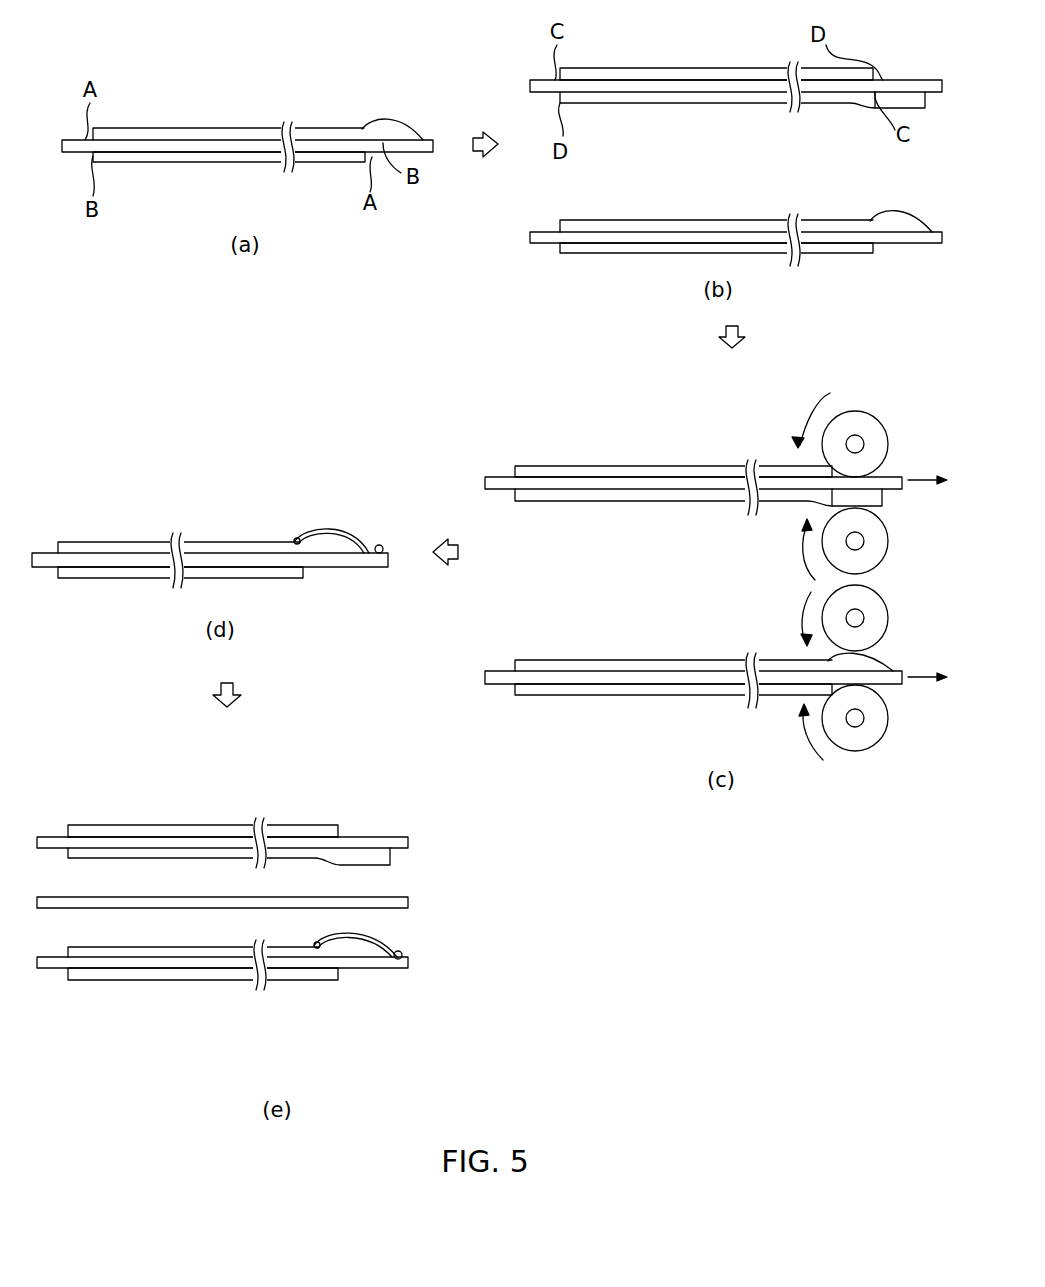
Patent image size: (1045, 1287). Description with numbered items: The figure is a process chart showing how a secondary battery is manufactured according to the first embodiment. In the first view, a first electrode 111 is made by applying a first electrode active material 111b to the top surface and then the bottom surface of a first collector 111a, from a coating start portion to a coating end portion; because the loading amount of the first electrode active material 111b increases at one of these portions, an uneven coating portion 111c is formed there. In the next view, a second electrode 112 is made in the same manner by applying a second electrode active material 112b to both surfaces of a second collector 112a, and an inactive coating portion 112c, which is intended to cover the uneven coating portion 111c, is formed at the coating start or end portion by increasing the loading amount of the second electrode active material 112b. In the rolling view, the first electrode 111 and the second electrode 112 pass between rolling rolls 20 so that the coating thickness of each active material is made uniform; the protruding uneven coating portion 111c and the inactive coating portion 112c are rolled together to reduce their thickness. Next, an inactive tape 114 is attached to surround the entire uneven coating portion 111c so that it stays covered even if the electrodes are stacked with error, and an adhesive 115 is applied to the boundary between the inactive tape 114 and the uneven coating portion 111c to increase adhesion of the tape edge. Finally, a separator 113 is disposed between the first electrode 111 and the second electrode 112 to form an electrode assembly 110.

The rolling roll 20 is at (880, 442).
The electrode assembly 110 is at (81, 810).
The first electrode 111 is at (357, 59).
The first collector 111a is at (173, 145).
The first electrode active material 111b is at (240, 160).
The uneven coating portion 111c is at (380, 130).
The second electrode 112 is at (772, 400).
The second collector 112a is at (685, 82).
The second electrode active material 112b is at (748, 98).
The inactive coating portion 112c is at (905, 97).
The separator 113 is at (408, 900).
The inactive tape 114 is at (352, 532).
The adhesive 115 is at (383, 548).